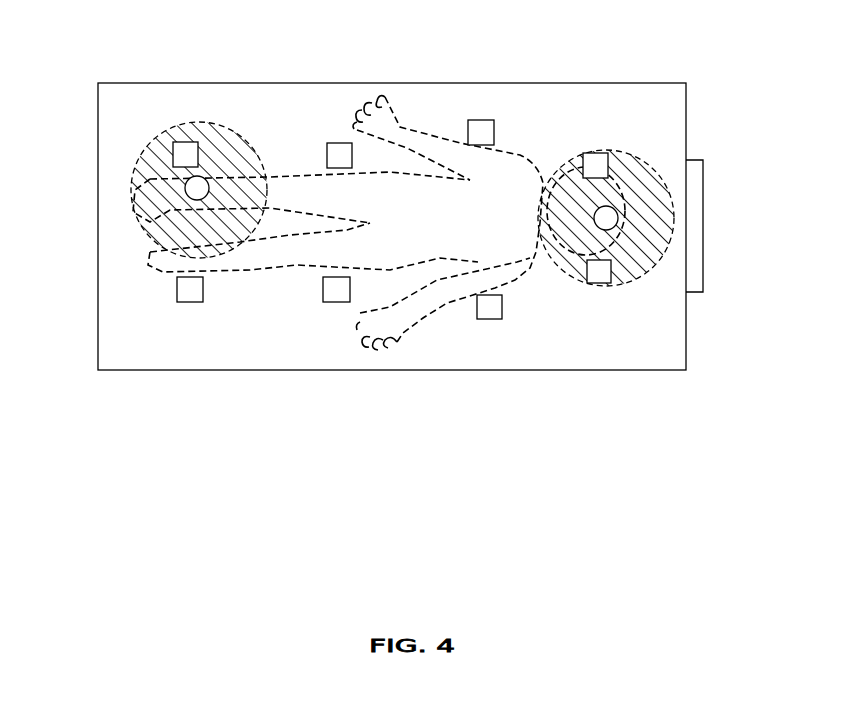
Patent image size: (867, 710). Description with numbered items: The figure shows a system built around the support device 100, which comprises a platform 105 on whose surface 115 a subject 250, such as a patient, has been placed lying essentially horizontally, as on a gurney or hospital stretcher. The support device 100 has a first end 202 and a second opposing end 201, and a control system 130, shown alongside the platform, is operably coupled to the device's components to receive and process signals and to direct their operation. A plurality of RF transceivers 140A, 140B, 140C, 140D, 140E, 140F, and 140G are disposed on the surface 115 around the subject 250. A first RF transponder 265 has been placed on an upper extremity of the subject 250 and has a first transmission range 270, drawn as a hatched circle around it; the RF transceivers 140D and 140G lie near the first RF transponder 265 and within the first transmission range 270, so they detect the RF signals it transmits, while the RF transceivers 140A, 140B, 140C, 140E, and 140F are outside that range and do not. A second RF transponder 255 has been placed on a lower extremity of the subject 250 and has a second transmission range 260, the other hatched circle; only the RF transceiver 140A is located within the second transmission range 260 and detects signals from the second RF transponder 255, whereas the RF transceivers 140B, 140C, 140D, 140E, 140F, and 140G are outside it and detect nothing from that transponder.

The support device 100 is at (662, 466).
The platform 105 is at (632, 83).
The surface 115 is at (140, 125).
The control system 130 is at (697, 187).
The RF transceiver 140A is at (183, 155).
The RF transceiver 140B is at (340, 155).
The RF transceiver 140C is at (472, 133).
The RF transceiver 140D is at (598, 165).
The RF transceiver 140E is at (333, 292).
The RF transceiver 140F is at (488, 308).
The RF transceiver 140G is at (597, 285).
The second opposing end 201 is at (97, 197).
The first end 202 is at (692, 318).
The subject 250 is at (430, 308).
The second RF transponder 255 is at (200, 185).
The second transmission range 260 is at (138, 222).
The first RF transponder 265 is at (610, 222).
The first transmission range 270 is at (640, 155).